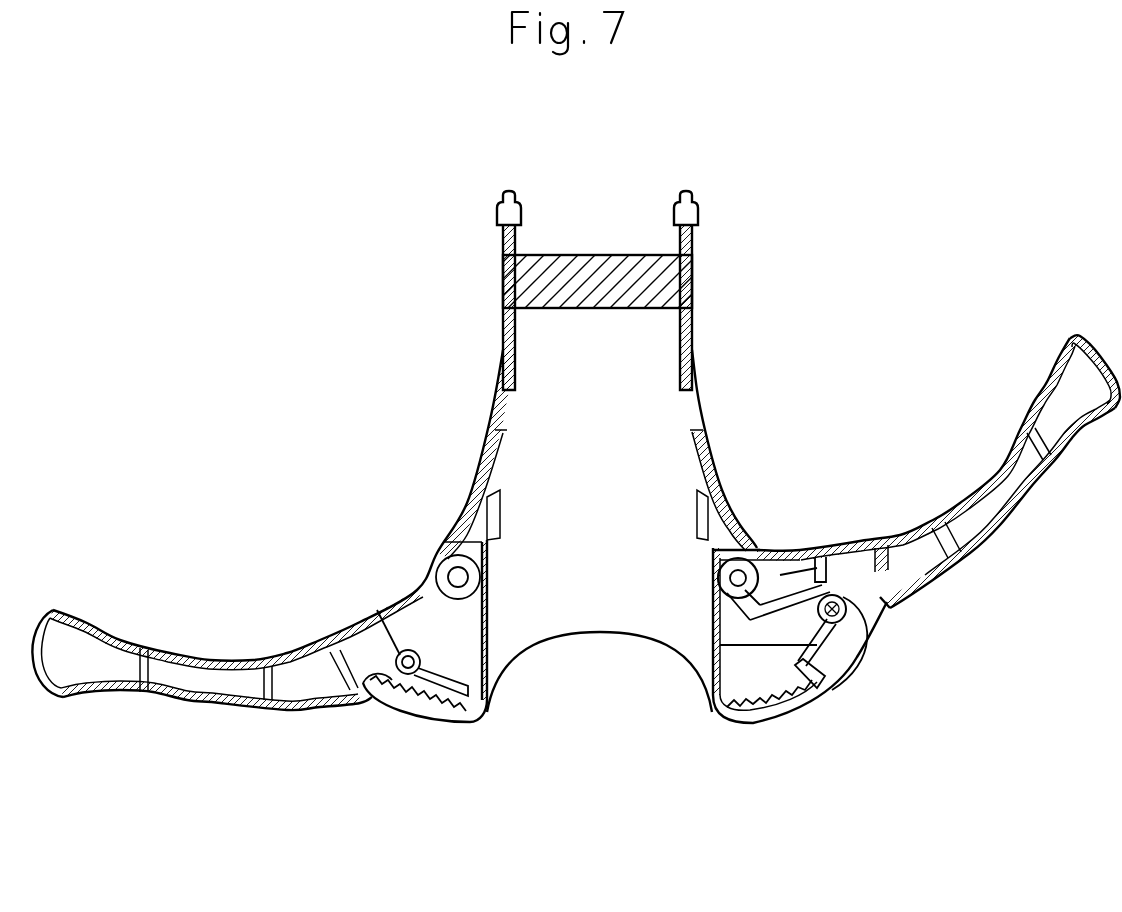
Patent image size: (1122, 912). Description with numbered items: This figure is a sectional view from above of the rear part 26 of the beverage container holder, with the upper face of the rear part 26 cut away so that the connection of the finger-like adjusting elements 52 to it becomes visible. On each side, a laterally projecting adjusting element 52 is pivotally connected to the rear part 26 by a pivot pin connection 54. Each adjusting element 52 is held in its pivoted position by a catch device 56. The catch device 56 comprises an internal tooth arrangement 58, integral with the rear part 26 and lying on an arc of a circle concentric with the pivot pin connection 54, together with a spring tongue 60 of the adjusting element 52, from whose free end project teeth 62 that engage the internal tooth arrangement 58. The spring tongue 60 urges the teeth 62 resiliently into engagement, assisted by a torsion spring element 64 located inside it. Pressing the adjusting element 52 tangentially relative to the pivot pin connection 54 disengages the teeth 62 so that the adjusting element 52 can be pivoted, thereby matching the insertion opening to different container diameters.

The rear part 26 is at (715, 462).
The adjusting element 52 is at (950, 575).
The pivot pin connection 54 is at (742, 575).
The catch device 56 is at (822, 778).
The internal tooth arrangement 58 is at (753, 713).
The spring tongue 60 is at (845, 648).
The teeth 62 is at (829, 690).
The torsion spring element 64 is at (834, 598).